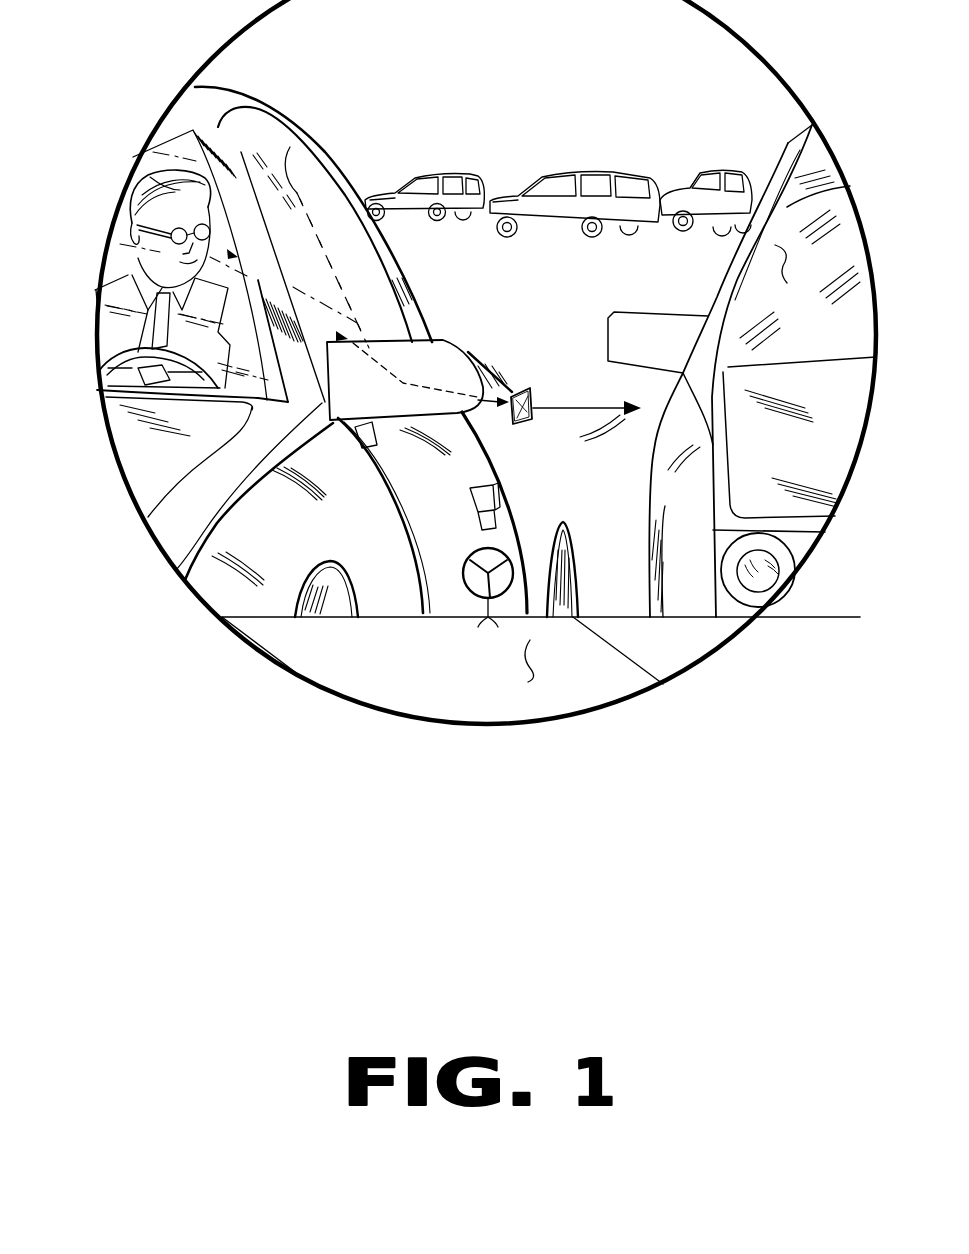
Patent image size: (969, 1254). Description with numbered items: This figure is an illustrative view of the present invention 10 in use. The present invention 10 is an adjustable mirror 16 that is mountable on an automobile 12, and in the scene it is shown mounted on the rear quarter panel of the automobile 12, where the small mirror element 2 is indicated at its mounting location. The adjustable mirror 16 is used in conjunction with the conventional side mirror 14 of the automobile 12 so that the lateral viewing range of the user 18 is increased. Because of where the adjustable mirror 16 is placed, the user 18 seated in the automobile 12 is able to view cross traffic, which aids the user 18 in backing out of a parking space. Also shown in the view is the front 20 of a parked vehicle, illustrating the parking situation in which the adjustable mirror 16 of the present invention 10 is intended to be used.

The imaging sensor / camera 2 is at (528, 376).
The present invention 10 is at (496, 346).
The automobile 12 is at (780, 270).
The conventional side mirror 14 is at (172, 567).
The adjustable mirror 16 is at (535, 397).
The user 18 is at (95, 325).
The front of a parked vehicle 20 is at (525, 660).